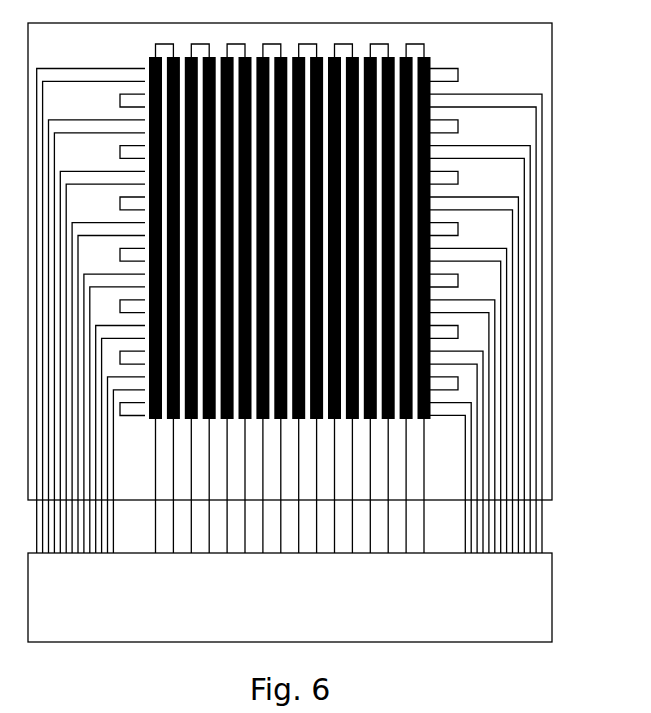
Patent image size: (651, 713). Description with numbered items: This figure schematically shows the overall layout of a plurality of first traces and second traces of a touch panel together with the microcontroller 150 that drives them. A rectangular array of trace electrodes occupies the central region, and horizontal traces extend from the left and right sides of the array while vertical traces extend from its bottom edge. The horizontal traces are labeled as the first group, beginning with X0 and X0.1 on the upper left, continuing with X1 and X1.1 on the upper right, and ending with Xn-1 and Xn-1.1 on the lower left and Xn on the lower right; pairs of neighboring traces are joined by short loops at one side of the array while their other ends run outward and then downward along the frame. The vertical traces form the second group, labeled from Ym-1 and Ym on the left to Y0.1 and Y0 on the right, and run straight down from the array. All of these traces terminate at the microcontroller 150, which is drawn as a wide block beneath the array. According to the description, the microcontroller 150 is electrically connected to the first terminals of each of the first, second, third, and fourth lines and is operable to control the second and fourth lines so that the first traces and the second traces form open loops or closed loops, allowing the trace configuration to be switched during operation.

The microcontroller 150 is at (553, 597).
The X0 drive line X0 is at (91, 303).
The X0.1 drive line X0.1 is at (94, 311).
The X1 drive line X1 is at (486, 316).
The X1.1 drive line X1.1 is at (483, 324).
The Xn-1 drive line Xn-1 is at (125, 461).
The Xn drive line Xn is at (450, 472).
The Xn-1.1 drive line Xn-1.1 is at (129, 471).
The Ym-1 sense line Ym-1 is at (167, 486).
The Ym sense line Ym is at (185, 486).
The Y0.1 sense line Y0.1 is at (419, 486).
The Y0 sense line Y0 is at (438, 486).